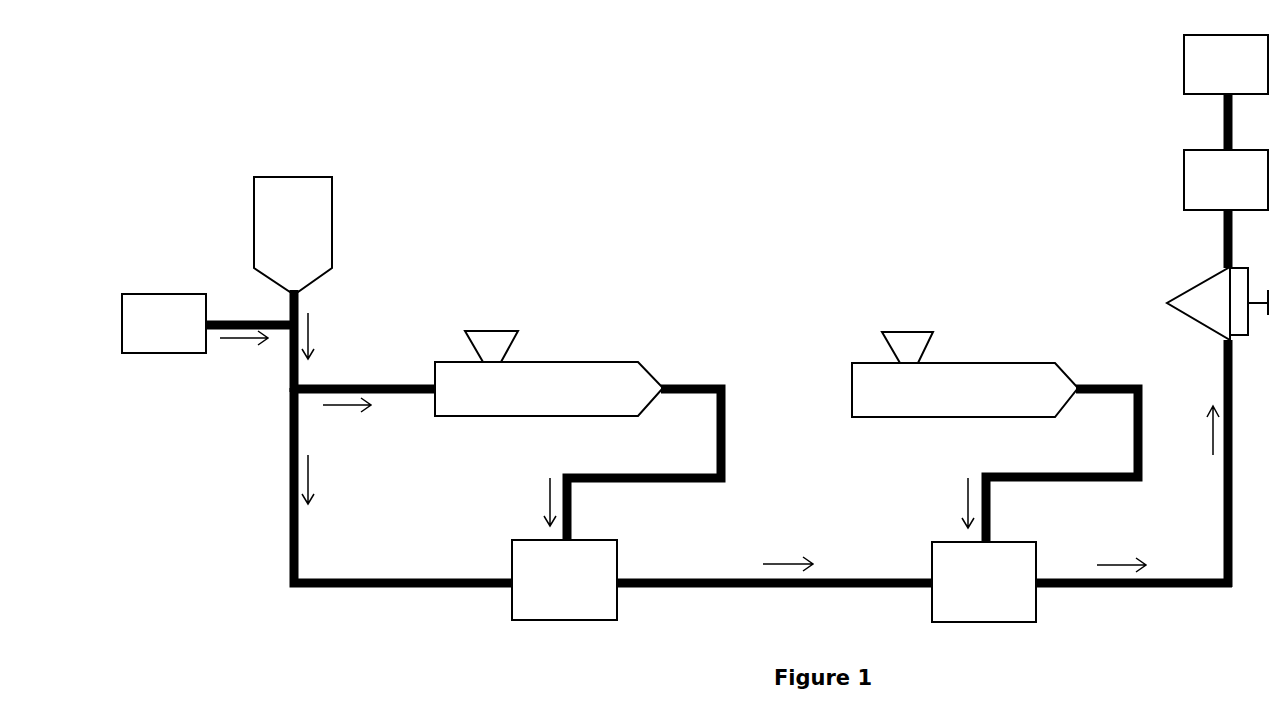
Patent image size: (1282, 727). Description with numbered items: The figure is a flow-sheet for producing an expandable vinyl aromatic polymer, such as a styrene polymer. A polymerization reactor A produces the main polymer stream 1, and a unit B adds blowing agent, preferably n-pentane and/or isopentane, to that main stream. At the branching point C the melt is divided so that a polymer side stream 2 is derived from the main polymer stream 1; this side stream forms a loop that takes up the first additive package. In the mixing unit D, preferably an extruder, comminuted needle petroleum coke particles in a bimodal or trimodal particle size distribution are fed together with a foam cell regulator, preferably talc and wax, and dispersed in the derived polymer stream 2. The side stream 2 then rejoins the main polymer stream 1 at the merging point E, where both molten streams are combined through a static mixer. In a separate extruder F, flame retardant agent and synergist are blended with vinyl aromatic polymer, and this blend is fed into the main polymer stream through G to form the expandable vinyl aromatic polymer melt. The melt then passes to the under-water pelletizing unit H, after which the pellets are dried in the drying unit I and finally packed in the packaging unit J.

The main polymer stream 1 is at (388, 485).
The polymer side stream 2 is at (362, 381).
The polymerization reactor A is at (293, 234).
The blowing agent addition unit B is at (208, 323).
The branching point C is at (288, 343).
The mixing unit D is at (578, 435).
The merging point E is at (722, 580).
The extruder F is at (995, 437).
The feed point G is at (1082, 582).
The under-water pelletizing unit H is at (1217, 398).
The drying unit I is at (1226, 152).
The packaging unit J is at (1226, 64).